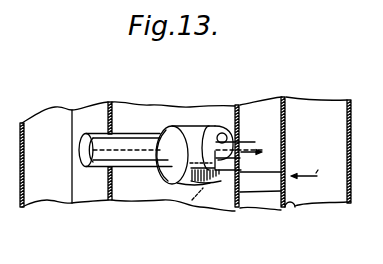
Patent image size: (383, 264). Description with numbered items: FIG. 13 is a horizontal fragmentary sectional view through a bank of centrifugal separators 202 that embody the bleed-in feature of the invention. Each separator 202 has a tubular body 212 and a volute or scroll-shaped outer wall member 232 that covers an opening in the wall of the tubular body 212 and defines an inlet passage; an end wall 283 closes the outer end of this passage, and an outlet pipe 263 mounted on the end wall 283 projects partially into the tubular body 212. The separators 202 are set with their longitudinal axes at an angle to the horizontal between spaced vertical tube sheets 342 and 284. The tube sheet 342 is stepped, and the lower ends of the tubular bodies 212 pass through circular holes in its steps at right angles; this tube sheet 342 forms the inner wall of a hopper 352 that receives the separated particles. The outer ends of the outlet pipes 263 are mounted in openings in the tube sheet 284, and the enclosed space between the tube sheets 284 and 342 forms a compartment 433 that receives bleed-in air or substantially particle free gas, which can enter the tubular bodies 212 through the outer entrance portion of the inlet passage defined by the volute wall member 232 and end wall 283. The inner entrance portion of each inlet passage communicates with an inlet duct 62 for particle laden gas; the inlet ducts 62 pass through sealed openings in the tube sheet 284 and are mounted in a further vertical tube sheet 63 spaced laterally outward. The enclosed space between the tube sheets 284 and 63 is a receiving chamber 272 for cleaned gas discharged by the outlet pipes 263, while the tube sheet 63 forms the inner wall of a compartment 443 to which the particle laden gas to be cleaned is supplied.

The centrifugal separator 202 is at (132, 128).
The tubular body 212 is at (115, 152).
The volute or scroll-shaped outer wall member 232 is at (186, 133).
The end wall 283 is at (216, 128).
The tube sheet 284 is at (241, 105).
The outlet pipe 263 is at (241, 151).
The inlet duct 62 is at (285, 178).
The tube sheet 63 is at (293, 207).
The hopper 352 is at (50, 198).
The tube sheet 342 is at (113, 202).
The compartment 433 is at (172, 199).
The receiving chamber 272 is at (270, 184).
The compartment 443 is at (318, 198).